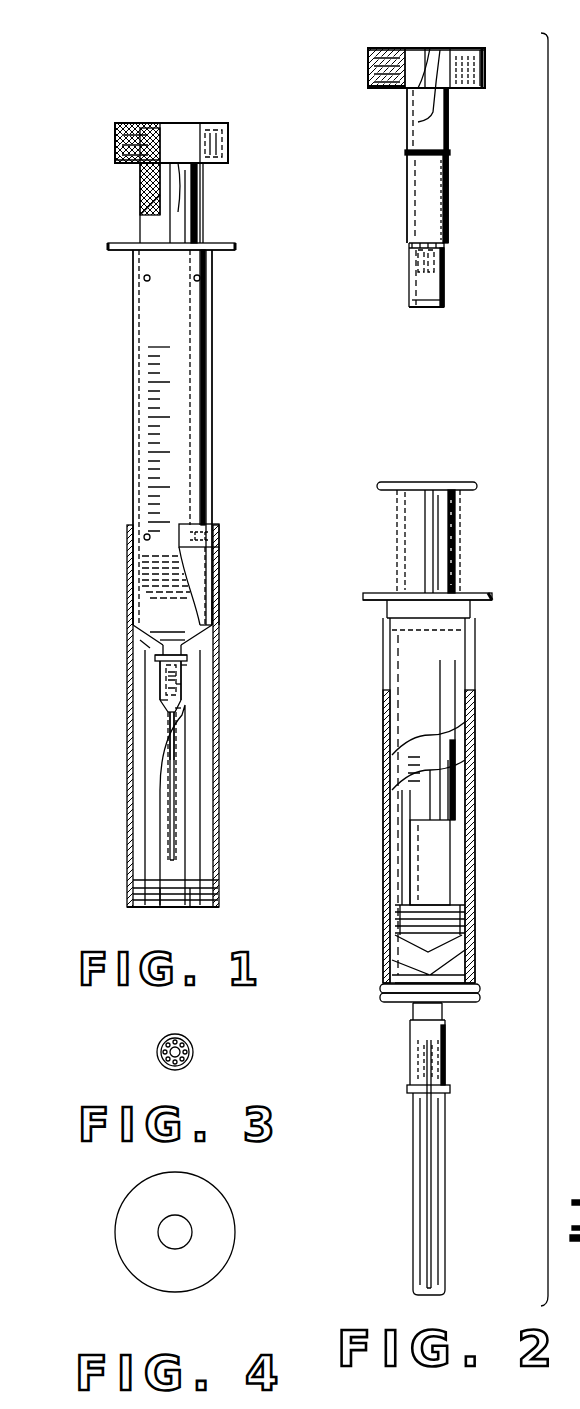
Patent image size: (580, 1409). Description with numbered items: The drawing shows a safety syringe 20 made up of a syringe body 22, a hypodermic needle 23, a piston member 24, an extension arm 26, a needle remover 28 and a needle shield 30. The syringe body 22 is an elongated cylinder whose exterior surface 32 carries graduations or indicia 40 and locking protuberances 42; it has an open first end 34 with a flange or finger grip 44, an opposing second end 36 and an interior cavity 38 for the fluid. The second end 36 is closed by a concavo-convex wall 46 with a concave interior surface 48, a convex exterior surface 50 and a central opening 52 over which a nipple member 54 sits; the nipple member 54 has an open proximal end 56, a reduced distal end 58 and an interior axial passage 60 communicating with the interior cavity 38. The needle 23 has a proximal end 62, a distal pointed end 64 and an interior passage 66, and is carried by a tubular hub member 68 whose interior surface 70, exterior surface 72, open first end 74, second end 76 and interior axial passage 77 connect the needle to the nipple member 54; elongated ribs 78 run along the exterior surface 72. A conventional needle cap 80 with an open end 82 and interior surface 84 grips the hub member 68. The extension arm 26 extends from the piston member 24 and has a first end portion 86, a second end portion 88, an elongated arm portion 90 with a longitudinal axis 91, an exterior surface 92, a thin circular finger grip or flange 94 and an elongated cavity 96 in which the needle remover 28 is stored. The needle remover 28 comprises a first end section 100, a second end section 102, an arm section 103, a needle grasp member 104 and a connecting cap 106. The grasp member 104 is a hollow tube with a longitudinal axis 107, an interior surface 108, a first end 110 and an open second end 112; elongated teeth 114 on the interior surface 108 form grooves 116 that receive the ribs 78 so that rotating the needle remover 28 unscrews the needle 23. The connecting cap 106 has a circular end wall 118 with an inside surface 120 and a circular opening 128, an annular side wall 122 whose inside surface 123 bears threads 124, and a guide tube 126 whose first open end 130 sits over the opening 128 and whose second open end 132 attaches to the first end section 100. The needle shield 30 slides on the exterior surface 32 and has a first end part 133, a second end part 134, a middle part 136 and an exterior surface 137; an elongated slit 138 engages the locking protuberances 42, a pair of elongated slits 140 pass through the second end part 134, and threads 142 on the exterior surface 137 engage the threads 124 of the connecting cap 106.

In FIG. 1, the safety syringe 20 is at (86, 96).
In FIG. 2, the safety syringe 20 is at (345, 45).
In FIG. 1, the syringe body 22 is at (133, 297).
In FIG. 2, the syringe body 22 is at (470, 645).
In FIG. 1, the hypodermic needle 23 is at (172, 770).
In FIG. 2, the hypodermic needle 23 is at (432, 1152).
In FIG. 1, the piston member 24 is at (150, 588).
In FIG. 2, the piston member 24 is at (445, 915).
In FIG. 1, the extension arm 26 is at (140, 493).
In FIG. 2, the extension arm 26 is at (440, 797).
In FIG. 1, the needle remover 28 is at (150, 190).
In FIG. 2, the needle remover 28 is at (400, 212).
In FIG. 1, the needle shield 30 is at (165, 690).
In FIG. 2, the needle shield 30 is at (440, 658).
In FIG. 1, the exterior surface 32 is at (170, 315).
In FIG. 2, the exterior surface 32 is at (440, 610).
In FIG. 1, the first end 34 is at (138, 244).
In FIG. 2, the first end 34 is at (386, 595).
In FIG. 1, the second end 36 is at (130, 645).
In FIG. 1, the interior cavity 38 is at (165, 605).
In FIG. 2, the interior cavity 38 is at (445, 942).
In FIG. 1, the graduations or indicia 40 is at (150, 405).
In FIG. 2, the graduations or indicia 40 is at (405, 778).
In FIG. 1, the locking protuberances 42 is at (200, 278).
In FIG. 1, the flange or finger grip 44 is at (118, 250).
In FIG. 2, the flange or finger grip 44 is at (476, 595).
In FIG. 1, the wall 46 is at (150, 635).
In FIG. 1, the concave interior surface 48 is at (215, 625).
In FIG. 1, the convex exterior surface 50 is at (190, 632).
In FIG. 1, the opening 52 is at (195, 642).
In FIG. 1, the nipple member 54 is at (187, 656).
In FIG. 1, the open proximal end 56 is at (125, 655).
In FIG. 1, the reduced distal end 58 is at (180, 698).
In FIG. 1, the interior axial passage 60 is at (180, 676).
In FIG. 1, the proximal end 62 is at (185, 706).
In FIG. 1, the distal pointed end 64 is at (180, 855).
In FIG. 1, the interior passage 66 is at (180, 800).
In FIG. 1, the hub member 68 is at (165, 700).
In FIG. 1, the interior surface 70 is at (160, 673).
In FIG. 1, the exterior surface 72 is at (168, 740).
In FIG. 1, the open first end 74 is at (190, 668).
In FIG. 1, the second end 76 is at (172, 758).
In FIG. 1, the interior axial passage 77 is at (185, 684).
In FIG. 1, the elongated ribs 78 is at (167, 713).
In FIG. 2, the elongated ribs 78 is at (420, 1068).
In FIG. 2, the needle cap 80 is at (405, 1130).
In FIG. 2, the open end 82 is at (410, 1016).
In FIG. 2, the interior surface 84 is at (446, 1016).
In FIG. 1, the first end portion 86 is at (130, 548).
In FIG. 2, the first end portion 86 is at (460, 887).
In FIG. 1, the second end portion 88 is at (165, 125).
In FIG. 2, the second end portion 88 is at (455, 485).
In FIG. 1, the elongated arm portion 90 is at (137, 282).
In FIG. 2, the elongated arm portion 90 is at (440, 782).
In FIG. 1, the longitudinal axis 91 is at (140, 350).
In FIG. 2, the longitudinal axis 91 is at (420, 805).
In FIG. 1, the exterior surface 92 is at (205, 210).
In FIG. 2, the exterior surface 92 is at (440, 810).
In FIG. 1, the finger grip or flange 94 is at (140, 125).
In FIG. 2, the finger grip or flange 94 is at (462, 485).
In FIG. 1, the elongated cavity 96 is at (196, 125).
In FIG. 2, the elongated cavity 96 is at (433, 860).
In FIG. 2, the first end section 100 is at (450, 152).
In FIG. 2, the second end section 102 is at (448, 184).
In FIG. 2, the arm section 103 is at (407, 170).
In FIG. 2, the needle grasp member 104 is at (430, 290).
In FIG. 1, the connecting cap 106 is at (114, 130).
In FIG. 2, the connecting cap 106 is at (372, 53).
In FIG. 2, the longitudinal axis 107 is at (445, 265).
In FIG. 2, the interior surface 108 is at (420, 310).
In FIG. 3, the interior surface 108 is at (180, 1038).
In FIG. 2, the first end 110 is at (452, 190).
In FIG. 2, the second end 112 is at (430, 308).
In FIG. 3, the second end 112 is at (185, 1066).
In FIG. 2, the elongated teeth 114 is at (420, 260).
In FIG. 3, the elongated teeth 114 is at (165, 1057).
In FIG. 3, the grooves 116 is at (168, 1042).
In FIG. 2, the circular end wall 118 is at (445, 60).
In FIG. 4, the circular end wall 118 is at (205, 1203).
In FIG. 2, the inside surface 120 is at (484, 70).
In FIG. 2, the annular side wall 122 is at (372, 78).
In FIG. 1, the inside surface 123 is at (130, 160).
In FIG. 2, the inside surface 123 is at (380, 90).
In FIG. 2, the threads 124 is at (370, 66).
In FIG. 2, the guide tube 126 is at (450, 118).
In FIG. 2, the circular opening 128 is at (425, 48).
In FIG. 4, the circular opening 128 is at (168, 1230).
In FIG. 2, the first open end 130 is at (458, 55).
In FIG. 2, the second open end 132 is at (405, 152).
In FIG. 1, the first end part 133 is at (215, 525).
In FIG. 1, the second end part 134 is at (140, 910).
In FIG. 1, the middle part 136 is at (205, 553).
In FIG. 1, the exterior surface 137 is at (205, 565).
In FIG. 1, the elongated slit 138 is at (210, 535).
In FIG. 1, the elongated slits 140 is at (192, 873).
In FIG. 1, the threads 142 is at (218, 899).